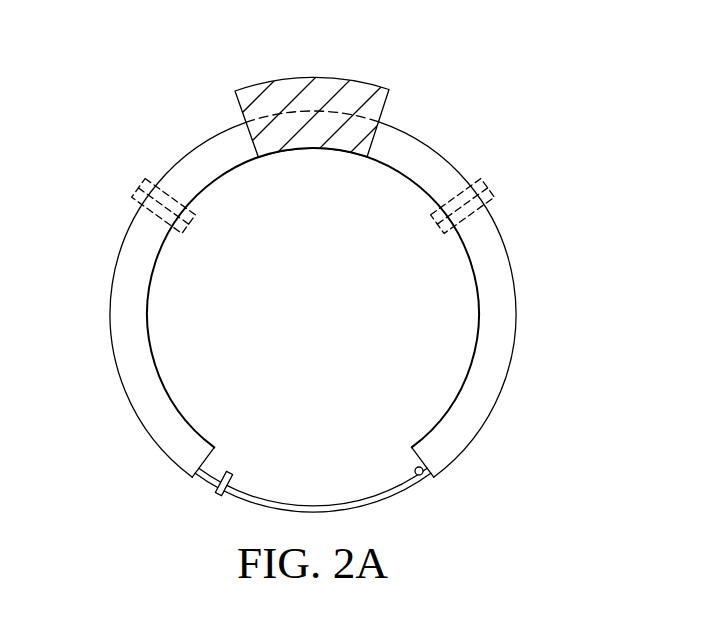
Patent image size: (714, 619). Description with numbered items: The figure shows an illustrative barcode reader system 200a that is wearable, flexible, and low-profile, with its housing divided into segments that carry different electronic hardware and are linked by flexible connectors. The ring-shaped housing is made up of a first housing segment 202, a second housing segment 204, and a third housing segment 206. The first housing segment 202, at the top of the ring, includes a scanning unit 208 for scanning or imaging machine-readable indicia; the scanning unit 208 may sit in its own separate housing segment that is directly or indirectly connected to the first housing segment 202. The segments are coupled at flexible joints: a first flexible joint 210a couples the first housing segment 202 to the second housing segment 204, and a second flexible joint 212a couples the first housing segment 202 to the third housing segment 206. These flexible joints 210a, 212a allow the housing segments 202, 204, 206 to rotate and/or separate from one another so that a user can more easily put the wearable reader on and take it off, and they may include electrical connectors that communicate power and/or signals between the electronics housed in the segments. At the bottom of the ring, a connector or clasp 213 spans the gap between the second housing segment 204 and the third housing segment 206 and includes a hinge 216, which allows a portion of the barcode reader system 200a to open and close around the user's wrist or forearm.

The barcode reader system 200a is at (182, 72).
The first housing segment 202 is at (425, 157).
The second housing segment 204 is at (116, 316).
The third housing segment 206 is at (510, 316).
The scanning unit 208 is at (329, 76).
The first flexible joint 210a is at (200, 242).
The second flexible joint 212a is at (426, 242).
The connector or clasp 213 is at (202, 490).
The hinge 216 is at (415, 469).